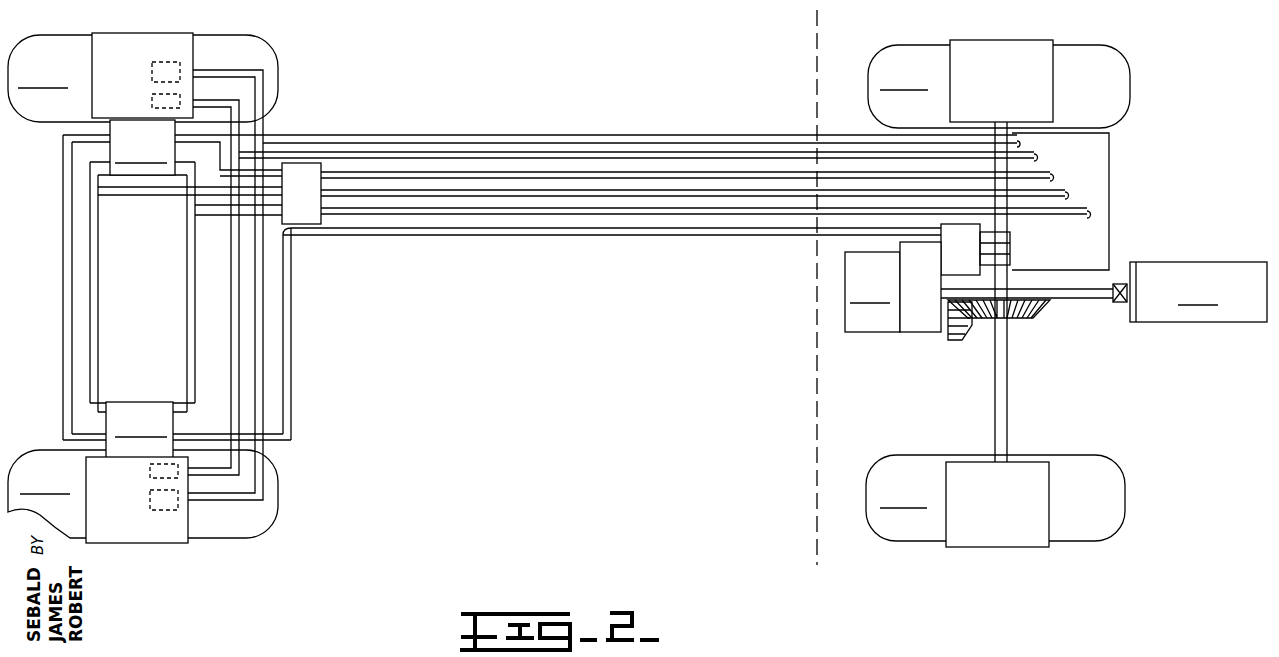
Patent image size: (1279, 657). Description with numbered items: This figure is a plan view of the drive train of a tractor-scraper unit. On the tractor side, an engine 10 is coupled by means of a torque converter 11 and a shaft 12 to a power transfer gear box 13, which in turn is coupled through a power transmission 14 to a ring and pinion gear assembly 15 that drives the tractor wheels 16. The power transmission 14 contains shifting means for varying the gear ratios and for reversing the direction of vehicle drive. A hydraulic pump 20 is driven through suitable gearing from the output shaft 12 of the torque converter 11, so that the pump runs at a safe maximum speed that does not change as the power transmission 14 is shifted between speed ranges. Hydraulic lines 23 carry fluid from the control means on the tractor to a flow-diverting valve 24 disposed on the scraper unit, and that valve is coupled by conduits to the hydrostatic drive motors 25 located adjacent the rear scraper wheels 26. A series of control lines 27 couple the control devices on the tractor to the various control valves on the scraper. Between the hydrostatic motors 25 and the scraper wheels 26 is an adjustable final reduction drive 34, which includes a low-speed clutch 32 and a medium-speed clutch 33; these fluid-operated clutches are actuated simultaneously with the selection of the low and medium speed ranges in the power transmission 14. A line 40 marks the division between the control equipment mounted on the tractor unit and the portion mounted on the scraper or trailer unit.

The engine 10 is at (1198, 292).
The torque converter 11 is at (1136, 262).
The shaft 12 is at (1050, 295).
The power transfer gear box 13 is at (918, 325).
The power transmission 14 is at (872, 292).
The ring and pinion gear assembly 15 is at (955, 328).
The tractor wheels 16 is at (998, 293).
The hydraulic pump 20 is at (963, 258).
The hydraulic lines 23 is at (600, 193).
The flow-diverting valve 24 is at (298, 212).
The hydrostatic drive motors 25 is at (140, 289).
The rear scraper wheels 26 is at (143, 286).
The control lines 27 is at (735, 235).
The low-speed clutch 32 is at (148, 473).
The medium-speed clutch 33 is at (153, 502).
The adjustable final reduction drive 34 is at (186, 566).
The line 40 is at (817, 518).